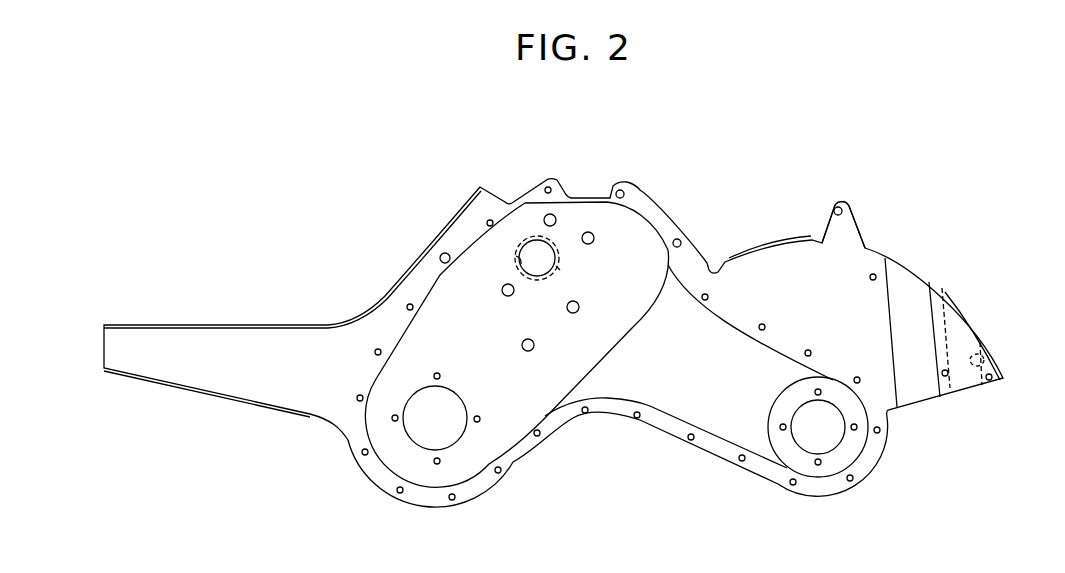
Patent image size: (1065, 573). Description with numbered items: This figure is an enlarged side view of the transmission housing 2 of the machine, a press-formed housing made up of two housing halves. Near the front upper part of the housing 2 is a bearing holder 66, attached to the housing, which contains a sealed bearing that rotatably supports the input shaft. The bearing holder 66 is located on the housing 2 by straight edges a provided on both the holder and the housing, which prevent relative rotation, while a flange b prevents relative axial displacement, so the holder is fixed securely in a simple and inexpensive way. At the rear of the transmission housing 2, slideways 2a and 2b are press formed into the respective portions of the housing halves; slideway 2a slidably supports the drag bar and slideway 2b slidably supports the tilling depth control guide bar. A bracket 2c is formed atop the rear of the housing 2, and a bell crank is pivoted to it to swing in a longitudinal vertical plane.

The transmission housing 2 is at (652, 208).
The slideway 2a is at (944, 310).
The slideway 2b is at (984, 356).
The bracket 2c is at (836, 227).
The bearing holder 66 is at (553, 241).
The straight edges a is at (521, 264).
The flange b is at (559, 268).